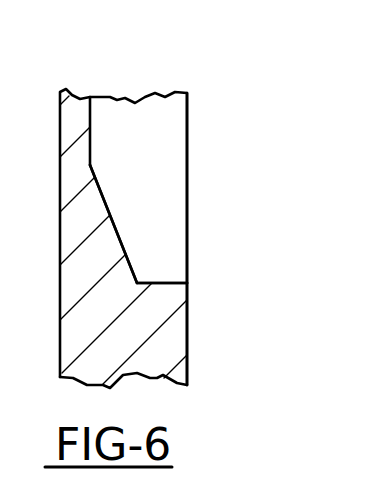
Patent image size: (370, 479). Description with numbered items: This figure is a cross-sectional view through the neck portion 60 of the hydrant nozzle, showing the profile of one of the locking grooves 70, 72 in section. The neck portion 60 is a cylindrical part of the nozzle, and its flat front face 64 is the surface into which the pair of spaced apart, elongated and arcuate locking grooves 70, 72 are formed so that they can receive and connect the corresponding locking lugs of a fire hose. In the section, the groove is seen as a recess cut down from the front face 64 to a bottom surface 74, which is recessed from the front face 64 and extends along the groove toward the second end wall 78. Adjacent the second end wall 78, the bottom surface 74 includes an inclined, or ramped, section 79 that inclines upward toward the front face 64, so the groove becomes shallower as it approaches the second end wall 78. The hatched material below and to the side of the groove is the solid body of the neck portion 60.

The neck portion 60 is at (214, 377).
The front face 64 is at (188, 333).
The locking groove 70 is at (191, 242).
The locking groove 72 is at (191, 242).
The bottom surface 74 is at (90, 128).
The second end wall 78 is at (173, 283).
The ramped section 79 is at (112, 208).